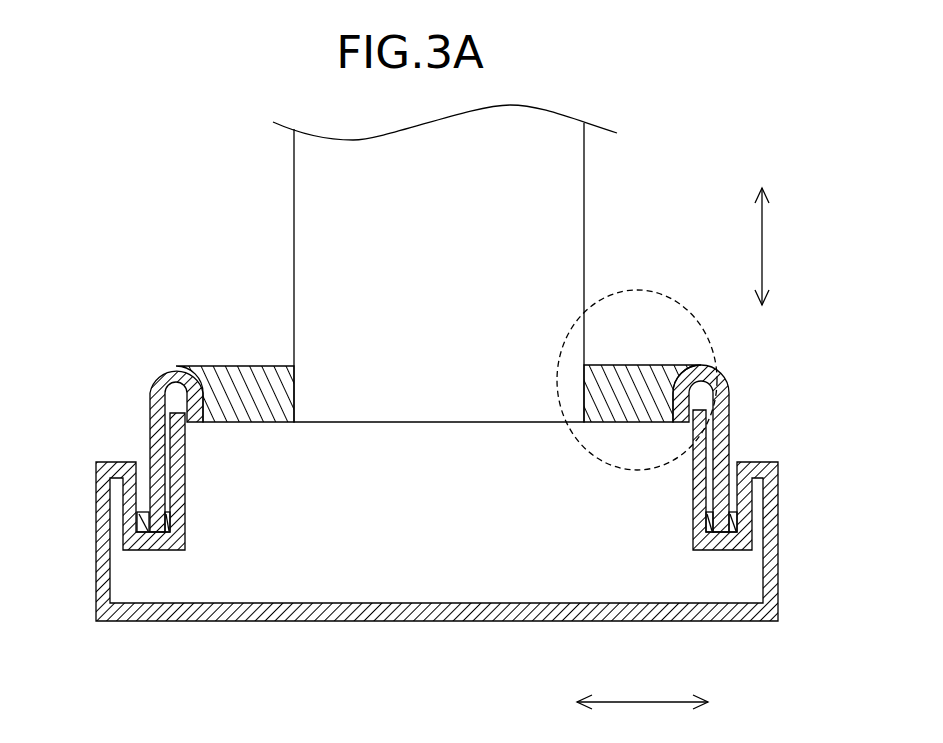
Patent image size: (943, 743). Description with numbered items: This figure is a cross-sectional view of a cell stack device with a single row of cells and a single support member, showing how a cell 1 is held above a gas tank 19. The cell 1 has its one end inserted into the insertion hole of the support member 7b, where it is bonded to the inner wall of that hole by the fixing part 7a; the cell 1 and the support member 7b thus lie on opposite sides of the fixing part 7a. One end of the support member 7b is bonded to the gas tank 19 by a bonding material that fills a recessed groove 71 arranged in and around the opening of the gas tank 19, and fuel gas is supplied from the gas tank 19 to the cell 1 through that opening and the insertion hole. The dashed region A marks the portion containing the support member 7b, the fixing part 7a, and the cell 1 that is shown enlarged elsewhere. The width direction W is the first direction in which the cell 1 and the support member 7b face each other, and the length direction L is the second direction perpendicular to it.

The cell 1 is at (553, 200).
The fixing part 7a is at (242, 385).
The support member 7b is at (167, 382).
The gas tank 19 is at (102, 460).
The recessed groove 71 is at (152, 535).
The region A is at (637, 362).
The length direction L is at (777, 246).
The width direction W is at (642, 684).